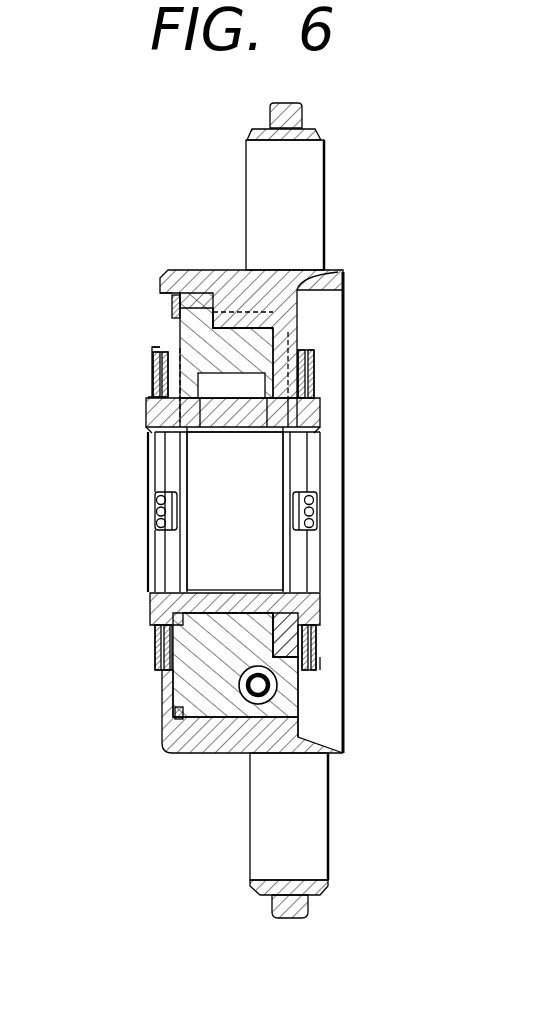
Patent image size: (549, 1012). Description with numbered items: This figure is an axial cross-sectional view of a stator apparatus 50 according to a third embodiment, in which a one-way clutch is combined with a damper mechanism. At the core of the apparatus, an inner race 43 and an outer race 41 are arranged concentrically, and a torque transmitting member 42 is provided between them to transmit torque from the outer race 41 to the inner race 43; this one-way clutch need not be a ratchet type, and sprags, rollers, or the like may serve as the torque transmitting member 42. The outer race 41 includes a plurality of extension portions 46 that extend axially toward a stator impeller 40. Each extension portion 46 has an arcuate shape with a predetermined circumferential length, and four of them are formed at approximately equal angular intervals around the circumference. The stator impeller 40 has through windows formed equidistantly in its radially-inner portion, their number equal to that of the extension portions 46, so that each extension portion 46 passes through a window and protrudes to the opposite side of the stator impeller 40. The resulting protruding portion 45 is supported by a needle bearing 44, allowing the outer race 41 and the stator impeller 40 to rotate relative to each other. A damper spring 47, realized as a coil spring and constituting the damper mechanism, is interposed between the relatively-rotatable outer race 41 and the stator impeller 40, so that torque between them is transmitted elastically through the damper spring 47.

The stator impeller 40 is at (283, 272).
The outer race 41 is at (165, 326).
The torque transmitting member 42 is at (177, 350).
The inner race 43 is at (180, 415).
The needle bearing 44 is at (317, 642).
The protruding portion 45 is at (318, 660).
The extension portion 46 is at (298, 698).
The damper spring 47 is at (244, 697).
The stator apparatus 50 is at (158, 182).